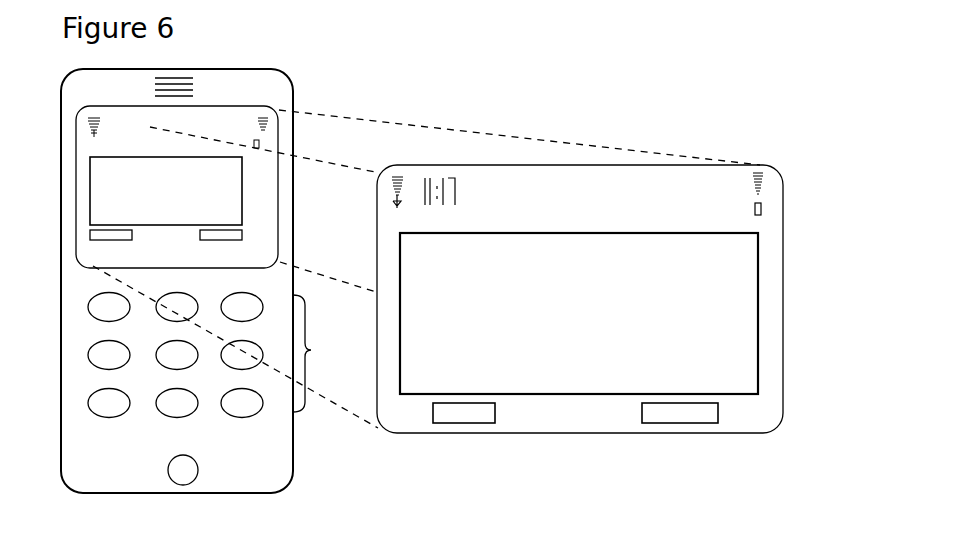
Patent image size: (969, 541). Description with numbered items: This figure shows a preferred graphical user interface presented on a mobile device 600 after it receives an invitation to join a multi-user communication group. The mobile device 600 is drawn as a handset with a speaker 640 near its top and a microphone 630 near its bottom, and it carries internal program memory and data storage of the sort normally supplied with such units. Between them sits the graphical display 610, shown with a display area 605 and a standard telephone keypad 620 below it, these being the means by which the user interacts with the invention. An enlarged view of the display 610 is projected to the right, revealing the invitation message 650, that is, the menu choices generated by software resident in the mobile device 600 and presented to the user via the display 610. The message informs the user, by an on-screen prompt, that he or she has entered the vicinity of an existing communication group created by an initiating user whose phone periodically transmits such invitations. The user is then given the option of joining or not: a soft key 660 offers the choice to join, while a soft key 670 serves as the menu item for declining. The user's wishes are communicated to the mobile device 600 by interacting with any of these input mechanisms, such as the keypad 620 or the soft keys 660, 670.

The mobile device 600 is at (281, 72).
The display 605 is at (84, 158).
The mobile device display 610 is at (278, 232).
The telephone keypad 620 is at (311, 350).
The microphone 630 is at (183, 485).
The speaker 640 is at (168, 72).
The invitation message 650 is at (760, 302).
The soft key 660 is at (441, 424).
The soft key 670 is at (650, 424).